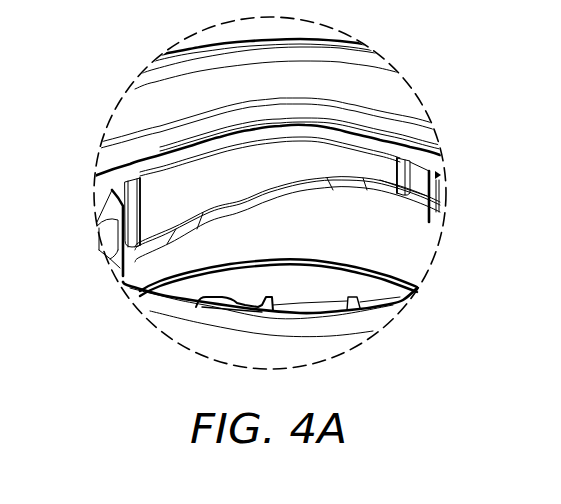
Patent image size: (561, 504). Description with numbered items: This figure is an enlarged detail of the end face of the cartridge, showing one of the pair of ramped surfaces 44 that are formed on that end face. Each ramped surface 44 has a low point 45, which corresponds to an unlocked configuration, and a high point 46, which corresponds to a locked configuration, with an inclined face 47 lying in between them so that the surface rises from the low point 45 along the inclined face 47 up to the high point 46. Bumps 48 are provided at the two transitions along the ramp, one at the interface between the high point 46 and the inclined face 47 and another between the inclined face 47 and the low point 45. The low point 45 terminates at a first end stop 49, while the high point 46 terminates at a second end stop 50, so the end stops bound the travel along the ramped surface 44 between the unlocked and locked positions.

The ramped surfaces 44 is at (298, 193).
The low point 45 is at (127, 250).
The high point 46 is at (417, 207).
The inclined face 47 is at (242, 208).
The bumps 48 is at (140, 194).
The first end stop 49 is at (121, 233).
The second end stop 50 is at (433, 216).